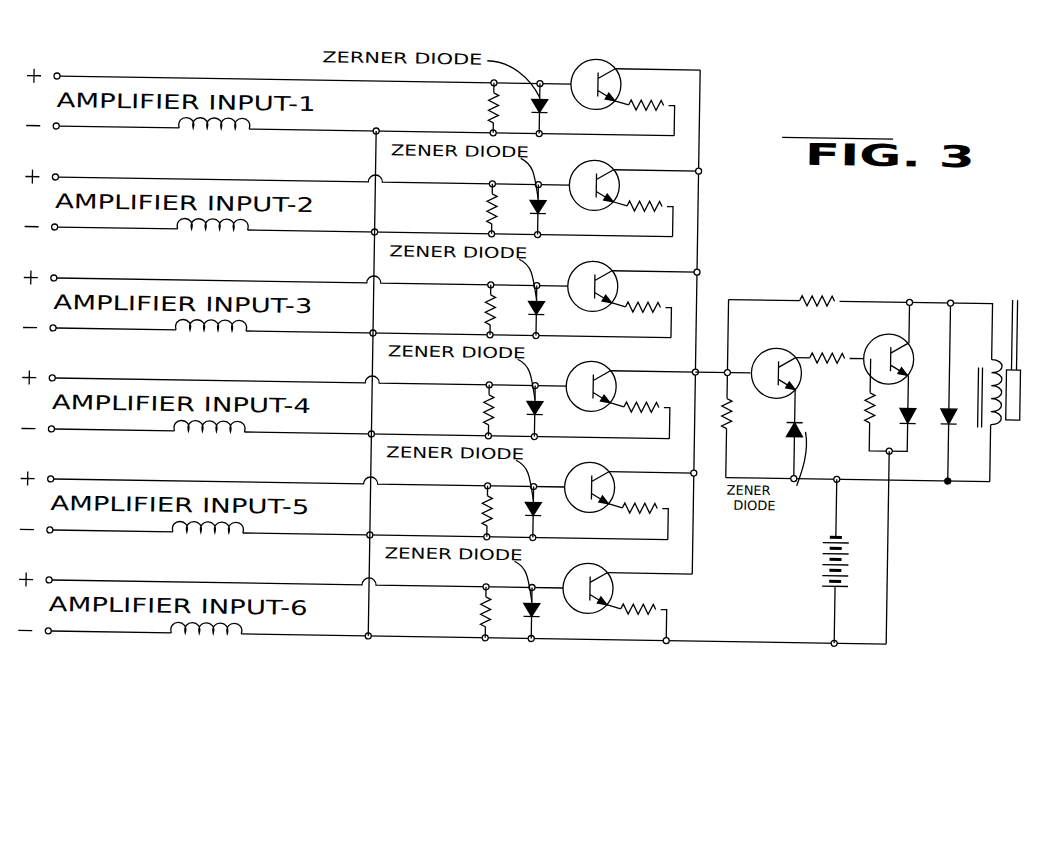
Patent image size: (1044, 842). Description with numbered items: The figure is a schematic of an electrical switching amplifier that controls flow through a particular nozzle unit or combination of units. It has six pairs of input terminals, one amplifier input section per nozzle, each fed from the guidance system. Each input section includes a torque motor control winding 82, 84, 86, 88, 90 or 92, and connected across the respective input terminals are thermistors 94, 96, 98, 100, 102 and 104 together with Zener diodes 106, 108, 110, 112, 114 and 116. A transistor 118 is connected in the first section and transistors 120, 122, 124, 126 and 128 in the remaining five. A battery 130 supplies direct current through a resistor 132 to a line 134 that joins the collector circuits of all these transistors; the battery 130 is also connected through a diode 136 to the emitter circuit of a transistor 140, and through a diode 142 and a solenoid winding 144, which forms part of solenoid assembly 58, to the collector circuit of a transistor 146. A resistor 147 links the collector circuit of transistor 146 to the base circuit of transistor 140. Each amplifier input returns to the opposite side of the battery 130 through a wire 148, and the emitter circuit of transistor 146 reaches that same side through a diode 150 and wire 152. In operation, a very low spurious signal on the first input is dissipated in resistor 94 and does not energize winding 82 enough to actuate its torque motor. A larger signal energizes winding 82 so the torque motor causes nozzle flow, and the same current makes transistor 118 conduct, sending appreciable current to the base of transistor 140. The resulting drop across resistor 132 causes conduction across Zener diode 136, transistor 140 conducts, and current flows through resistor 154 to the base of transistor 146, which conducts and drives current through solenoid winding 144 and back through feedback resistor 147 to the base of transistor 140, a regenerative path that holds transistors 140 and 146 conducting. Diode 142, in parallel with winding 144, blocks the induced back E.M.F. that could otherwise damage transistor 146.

The solenoid assembly 58 is at (1024, 297).
The torque motor control winding 82 is at (239, 132).
The torque motor control winding 84 is at (239, 233).
The torque motor control winding 86 is at (239, 334).
The torque motor control winding 88 is at (239, 435).
The torque motor control winding 90 is at (239, 536).
The torque motor control winding 92 is at (239, 637).
The thermistor 94 is at (488, 94).
The thermistor 96 is at (488, 195).
The thermistor 98 is at (488, 296).
The thermistor 100 is at (488, 396).
The thermistor 102 is at (488, 497).
The thermistor 104 is at (488, 598).
The Zener diode 106 is at (547, 99).
The Zener diode 108 is at (547, 200).
The Zener diode 110 is at (547, 301).
The Zener diode 112 is at (547, 401).
The Zener diode 114 is at (547, 502).
The Zener diode 116 is at (547, 603).
The transistor 118 is at (590, 51).
The transistor 120 is at (590, 152).
The transistor 122 is at (590, 253).
The transistor 124 is at (590, 353).
The transistor 126 is at (590, 454).
The transistor 128 is at (590, 555).
The battery 130 is at (829, 548).
The resistor 132 is at (737, 419).
The line 134 is at (701, 275).
The Zener diode 136 is at (806, 418).
The transistor 140 is at (772, 341).
The diode 142 is at (955, 411).
The solenoid winding 144 is at (998, 410).
The transistor 146 is at (884, 306).
The feedback resistor 147 is at (828, 288).
The wire 148 is at (378, 599).
The diode 150 is at (920, 408).
The wire 152 is at (897, 557).
The resistor 154 is at (838, 350).